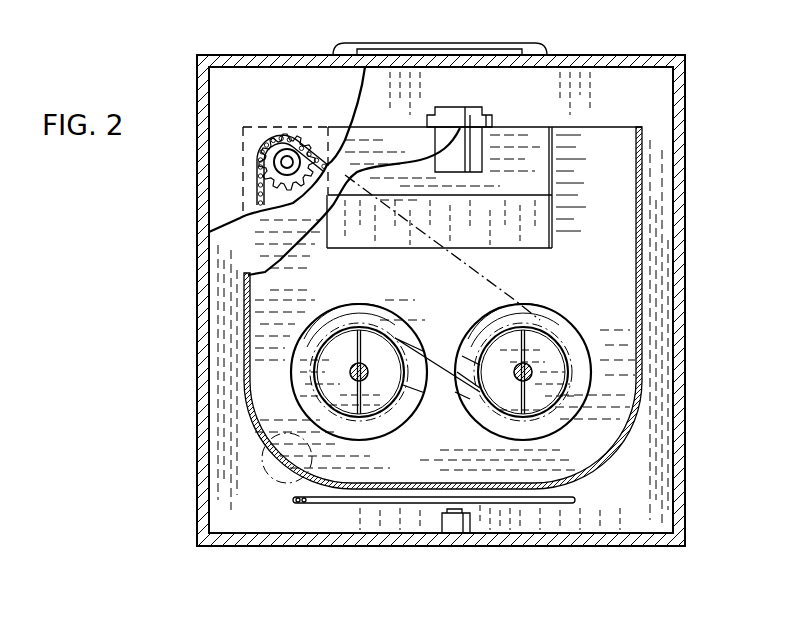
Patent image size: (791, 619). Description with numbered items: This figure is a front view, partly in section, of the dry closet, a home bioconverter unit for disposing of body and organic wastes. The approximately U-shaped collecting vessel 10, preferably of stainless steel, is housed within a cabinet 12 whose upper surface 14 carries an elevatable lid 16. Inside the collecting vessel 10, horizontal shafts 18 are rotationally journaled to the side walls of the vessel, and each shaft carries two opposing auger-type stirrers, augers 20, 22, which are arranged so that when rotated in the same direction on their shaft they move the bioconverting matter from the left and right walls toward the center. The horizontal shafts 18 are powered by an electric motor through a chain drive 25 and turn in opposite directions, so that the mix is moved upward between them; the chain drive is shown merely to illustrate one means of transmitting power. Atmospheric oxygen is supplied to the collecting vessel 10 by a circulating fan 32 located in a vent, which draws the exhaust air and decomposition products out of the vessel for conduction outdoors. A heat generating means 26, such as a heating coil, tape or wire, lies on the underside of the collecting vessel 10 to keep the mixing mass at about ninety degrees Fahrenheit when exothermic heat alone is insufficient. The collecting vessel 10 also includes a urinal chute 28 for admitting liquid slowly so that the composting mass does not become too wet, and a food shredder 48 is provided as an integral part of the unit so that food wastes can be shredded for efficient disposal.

The collecting vessel 10 is at (642, 183).
The cabinet 12 is at (685, 257).
The upper surface 14 is at (306, 55).
The elevatable lid 16 is at (438, 43).
The horizontal shafts 18 is at (368, 372).
The auger 20 is at (392, 293).
The auger 22 is at (568, 327).
The chain drive 25 is at (309, 135).
The heat generating means 26 is at (350, 503).
The urinal chute 28 is at (533, 140).
The circulating fan 32 is at (453, 528).
The food shredder 48 is at (453, 122).